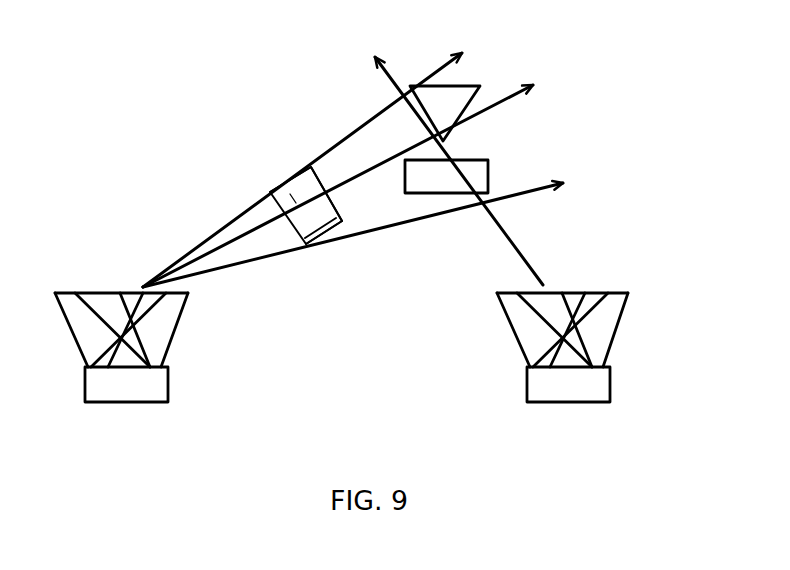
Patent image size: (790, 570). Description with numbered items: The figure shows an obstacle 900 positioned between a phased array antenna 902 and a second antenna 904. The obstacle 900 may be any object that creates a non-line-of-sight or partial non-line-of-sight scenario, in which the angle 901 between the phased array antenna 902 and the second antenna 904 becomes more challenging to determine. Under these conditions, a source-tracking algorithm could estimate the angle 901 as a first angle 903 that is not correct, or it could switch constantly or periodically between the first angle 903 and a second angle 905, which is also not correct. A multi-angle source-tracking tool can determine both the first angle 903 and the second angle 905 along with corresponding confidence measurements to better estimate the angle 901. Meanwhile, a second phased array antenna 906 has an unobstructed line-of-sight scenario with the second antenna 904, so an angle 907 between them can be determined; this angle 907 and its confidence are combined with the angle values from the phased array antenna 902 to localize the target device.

The obstacle 900 is at (270, 190).
The angle 901 is at (311, 167).
The phased array antenna 902 is at (170, 379).
The first angle 903 is at (337, 243).
The second antenna 904 is at (450, 140).
The second angle 905 is at (385, 97).
The second phased array antenna 906 is at (611, 379).
The angle 907 is at (525, 250).